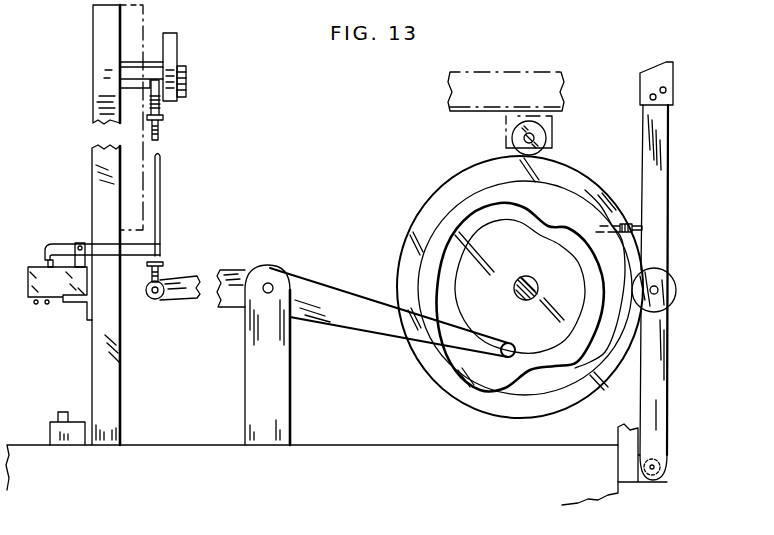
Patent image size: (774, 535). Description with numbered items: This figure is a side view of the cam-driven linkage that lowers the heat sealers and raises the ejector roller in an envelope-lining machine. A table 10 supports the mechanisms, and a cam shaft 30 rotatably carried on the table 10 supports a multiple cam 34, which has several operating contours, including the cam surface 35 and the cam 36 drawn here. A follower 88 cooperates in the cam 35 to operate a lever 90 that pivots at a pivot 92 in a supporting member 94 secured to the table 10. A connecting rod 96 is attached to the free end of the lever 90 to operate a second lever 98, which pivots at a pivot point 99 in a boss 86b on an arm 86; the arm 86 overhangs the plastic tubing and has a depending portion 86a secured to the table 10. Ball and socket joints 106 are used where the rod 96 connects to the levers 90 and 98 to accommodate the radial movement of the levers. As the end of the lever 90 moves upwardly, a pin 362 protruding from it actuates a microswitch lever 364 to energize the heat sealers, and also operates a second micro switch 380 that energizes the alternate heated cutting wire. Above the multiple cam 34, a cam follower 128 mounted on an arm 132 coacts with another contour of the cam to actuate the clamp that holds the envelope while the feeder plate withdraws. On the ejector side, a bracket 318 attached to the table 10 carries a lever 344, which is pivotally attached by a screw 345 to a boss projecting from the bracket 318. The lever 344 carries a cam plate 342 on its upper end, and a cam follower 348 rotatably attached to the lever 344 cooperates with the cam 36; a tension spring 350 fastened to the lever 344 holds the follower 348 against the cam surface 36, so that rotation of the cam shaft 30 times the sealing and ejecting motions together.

The table 10 is at (167, 447).
The cam shaft 30 is at (533, 282).
The multiple cam 34 is at (412, 216).
The cam surface 35 is at (542, 352).
The cam 36 is at (577, 192).
The arm 86 is at (102, 38).
The depending portion 86a is at (110, 395).
The boss 86b is at (135, 72).
The follower 88 is at (517, 360).
The lever 90 is at (325, 292).
The pivot 92 is at (266, 283).
The supporting member 94 is at (273, 358).
The connecting rod 96 is at (160, 182).
The second lever 98 is at (172, 51).
The pivot point 99 is at (186, 73).
The ball and socket joints 106 is at (155, 90).
The cam follower 128 is at (512, 138).
The arm 132 is at (503, 72).
The bracket 318 is at (620, 438).
The cam plate 342 is at (640, 82).
The lever 344 is at (660, 222).
The screw 345 is at (660, 465).
The cam follower 348 is at (676, 283).
The tension spring 350 is at (631, 224).
The pin 362 is at (153, 300).
The microswitch lever 364 is at (100, 247).
The second micro switch 380 is at (46, 304).